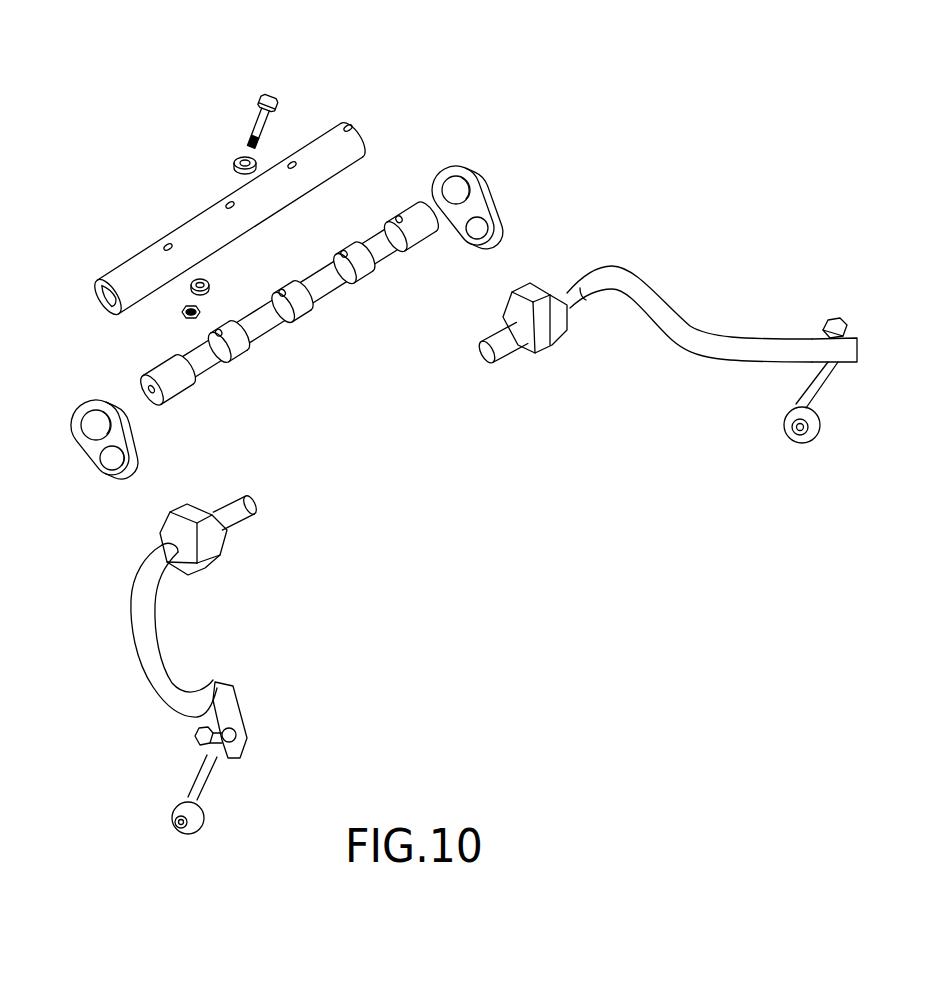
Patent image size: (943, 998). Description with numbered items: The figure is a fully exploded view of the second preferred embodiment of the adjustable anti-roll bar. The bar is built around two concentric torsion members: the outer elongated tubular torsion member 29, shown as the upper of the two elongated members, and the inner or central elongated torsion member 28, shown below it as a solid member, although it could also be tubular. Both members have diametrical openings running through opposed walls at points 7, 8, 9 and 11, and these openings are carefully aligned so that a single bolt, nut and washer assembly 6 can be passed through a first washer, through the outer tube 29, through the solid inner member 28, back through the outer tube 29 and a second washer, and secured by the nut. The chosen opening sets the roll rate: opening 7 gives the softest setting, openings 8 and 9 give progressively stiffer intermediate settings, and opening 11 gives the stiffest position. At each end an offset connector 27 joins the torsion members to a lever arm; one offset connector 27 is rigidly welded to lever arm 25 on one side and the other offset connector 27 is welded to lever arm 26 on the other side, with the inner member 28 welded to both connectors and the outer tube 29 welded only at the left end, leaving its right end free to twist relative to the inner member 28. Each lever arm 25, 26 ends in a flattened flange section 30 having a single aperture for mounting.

The bolt, nut and washer assembly 6 is at (253, 127).
The diametrical opening 7 is at (165, 238).
The diametrical opening 8 is at (223, 202).
The diametrical opening 9 is at (292, 163).
The diametrical opening 11 is at (348, 128).
The lever arm 25 is at (508, 335).
The lever arm 26 is at (243, 513).
The offset connector 27 is at (490, 207).
The inner elongated torsion member 28 is at (268, 320).
The outer elongated torsion member 29 is at (137, 257).
The flange section 30 is at (847, 337).